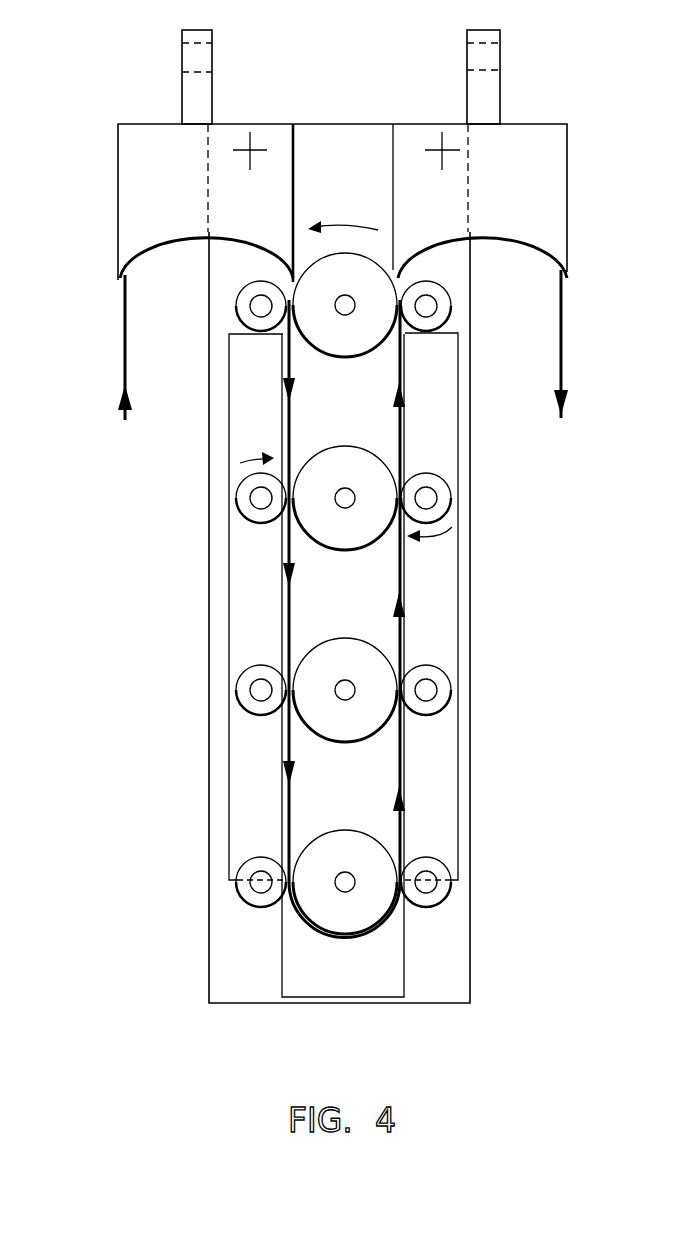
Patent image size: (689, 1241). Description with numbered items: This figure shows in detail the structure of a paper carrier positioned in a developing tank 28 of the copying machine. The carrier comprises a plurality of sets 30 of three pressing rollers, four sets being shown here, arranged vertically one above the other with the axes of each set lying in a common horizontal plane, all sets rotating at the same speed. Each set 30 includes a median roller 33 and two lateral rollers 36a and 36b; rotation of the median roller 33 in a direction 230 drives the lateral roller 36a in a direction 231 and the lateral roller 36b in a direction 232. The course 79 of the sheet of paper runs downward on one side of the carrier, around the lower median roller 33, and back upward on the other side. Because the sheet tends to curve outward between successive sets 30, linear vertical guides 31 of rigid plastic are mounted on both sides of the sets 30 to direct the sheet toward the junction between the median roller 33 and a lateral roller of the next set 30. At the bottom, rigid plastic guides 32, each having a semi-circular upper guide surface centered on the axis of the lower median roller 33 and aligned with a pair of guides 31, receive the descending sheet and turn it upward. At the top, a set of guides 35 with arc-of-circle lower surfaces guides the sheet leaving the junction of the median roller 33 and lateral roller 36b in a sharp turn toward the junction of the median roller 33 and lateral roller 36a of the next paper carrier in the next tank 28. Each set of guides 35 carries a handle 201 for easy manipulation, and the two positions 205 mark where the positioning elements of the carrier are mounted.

The handle 201 is at (182, 42).
The positions of positioning elements 205 is at (442, 150).
The guide 35 is at (135, 198).
The course of the sheet of paper 79 is at (290, 637).
The direction of rotation of median roller 230 is at (345, 222).
The median roller 33 is at (345, 337).
The lateral roller 36a is at (250, 307).
The lateral roller 36b is at (440, 304).
The set of pressing rollers 30 is at (192, 529).
The direction of rotation of lateral roller 36a 231 is at (240, 463).
The direction of rotation of lateral roller 36b 232 is at (452, 527).
The vertical guide 31 is at (237, 783).
The tank 28 is at (208, 977).
The guide 32 is at (343, 982).